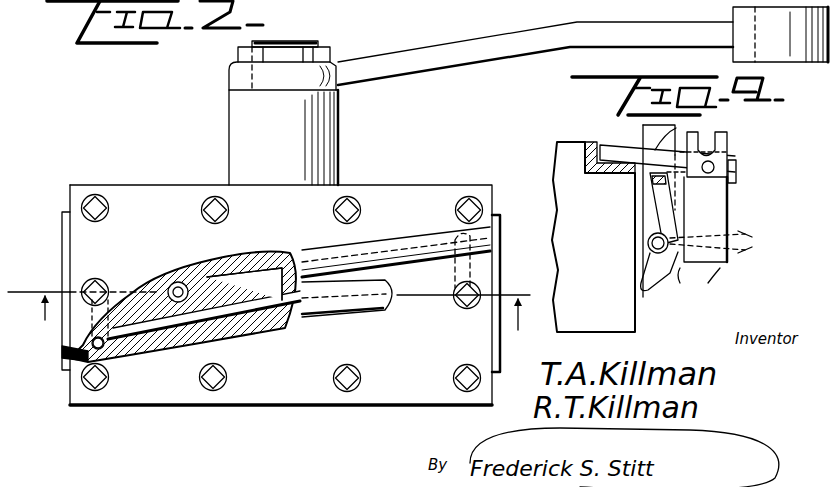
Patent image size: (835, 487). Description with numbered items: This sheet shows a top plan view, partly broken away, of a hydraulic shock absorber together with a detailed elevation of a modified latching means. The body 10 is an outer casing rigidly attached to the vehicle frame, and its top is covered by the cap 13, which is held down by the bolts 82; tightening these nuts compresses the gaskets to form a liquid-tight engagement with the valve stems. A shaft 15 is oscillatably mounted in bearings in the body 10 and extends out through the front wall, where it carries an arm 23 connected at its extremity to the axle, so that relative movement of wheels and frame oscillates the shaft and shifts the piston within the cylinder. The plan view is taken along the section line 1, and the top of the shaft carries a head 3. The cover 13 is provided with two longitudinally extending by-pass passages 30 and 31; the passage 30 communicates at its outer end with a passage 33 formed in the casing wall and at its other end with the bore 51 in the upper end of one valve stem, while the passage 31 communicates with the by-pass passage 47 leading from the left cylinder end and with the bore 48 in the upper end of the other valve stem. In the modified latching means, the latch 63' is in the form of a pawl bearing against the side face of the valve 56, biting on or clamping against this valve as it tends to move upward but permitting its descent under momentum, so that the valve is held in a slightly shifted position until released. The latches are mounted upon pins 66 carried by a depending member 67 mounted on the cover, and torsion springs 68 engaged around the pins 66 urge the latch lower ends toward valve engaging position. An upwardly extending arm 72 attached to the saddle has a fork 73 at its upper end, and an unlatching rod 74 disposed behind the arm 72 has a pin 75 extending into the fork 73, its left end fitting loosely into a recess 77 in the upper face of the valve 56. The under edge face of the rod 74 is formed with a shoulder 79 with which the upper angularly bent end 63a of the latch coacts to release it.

In FIG. 2, the section line 1 is at (269, 323).
In FIG. 2, the handle knob 3 is at (440, 33).
In FIG. 2, the body 10 is at (502, 241).
In FIG. 2, the cap 13 is at (390, 192).
In FIG. 2, the shaft 15 is at (296, 42).
In FIG. 2, the arm 23 is at (515, 50).
In FIG. 2, the by-pass passage 30 is at (212, 287).
In FIG. 2, the by-pass passage 31 is at (188, 330).
In FIG. 2, the passage 33 is at (452, 232).
In FIG. 2, the by-pass passage 47 is at (70, 365).
In FIG. 2, the bore 48 is at (381, 320).
In FIG. 2, the bore 51 is at (172, 284).
In FIG. 2, the bolts 82 is at (472, 205).
In FIG. 9, the valve 56 is at (593, 237).
In FIG. 9, the latch 63' is at (719, 232).
In FIG. 9, the angularly bent end 63a is at (675, 187).
In FIG. 9, the pins 66 is at (650, 252).
In FIG. 9, the depending member 67 is at (650, 132).
In FIG. 9, the torsion springs 68 is at (708, 283).
In FIG. 9, the arm 72 is at (730, 222).
In FIG. 9, the fork 73 is at (733, 140).
In FIG. 9, the unlatching rod 74 is at (735, 160).
In FIG. 9, the pin 75 is at (737, 172).
In FIG. 9, the recess 77 is at (608, 155).
In FIG. 9, the shoulder 79 is at (680, 130).